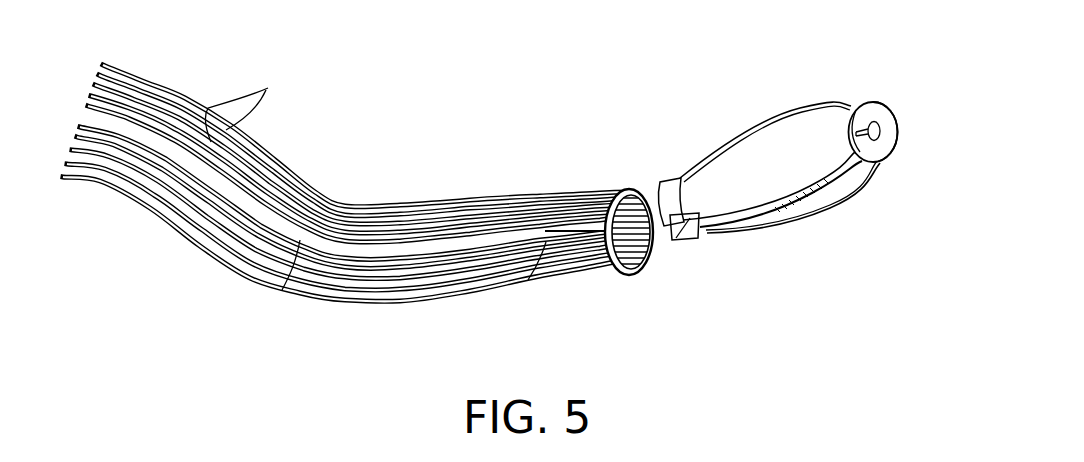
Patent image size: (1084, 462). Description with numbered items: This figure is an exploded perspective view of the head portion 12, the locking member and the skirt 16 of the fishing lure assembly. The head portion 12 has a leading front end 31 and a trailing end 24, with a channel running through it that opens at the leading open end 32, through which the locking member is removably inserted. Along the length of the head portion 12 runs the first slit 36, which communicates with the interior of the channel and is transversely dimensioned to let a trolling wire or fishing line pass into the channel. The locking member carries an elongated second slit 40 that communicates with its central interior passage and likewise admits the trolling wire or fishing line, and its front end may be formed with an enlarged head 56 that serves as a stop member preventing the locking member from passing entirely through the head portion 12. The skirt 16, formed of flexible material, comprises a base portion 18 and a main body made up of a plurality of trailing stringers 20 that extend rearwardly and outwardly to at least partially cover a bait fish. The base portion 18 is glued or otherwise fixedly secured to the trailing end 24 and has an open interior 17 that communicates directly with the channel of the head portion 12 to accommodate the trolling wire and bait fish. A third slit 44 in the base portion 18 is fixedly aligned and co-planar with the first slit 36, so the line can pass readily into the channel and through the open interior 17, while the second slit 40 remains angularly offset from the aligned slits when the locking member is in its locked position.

The head portion 12 is at (736, 130).
The skirt 16 is at (518, 172).
The open interior 17 is at (641, 188).
The base portion 18 is at (624, 270).
The trailing stringers 20 is at (245, 100).
The trailing end 24 is at (678, 237).
The leading front end 31 is at (892, 93).
The leading open end 32 is at (897, 155).
The first slit 36 is at (768, 207).
The second slit 40 is at (855, 104).
The third slit 44 is at (282, 290).
The enlarged head 56 is at (887, 118).